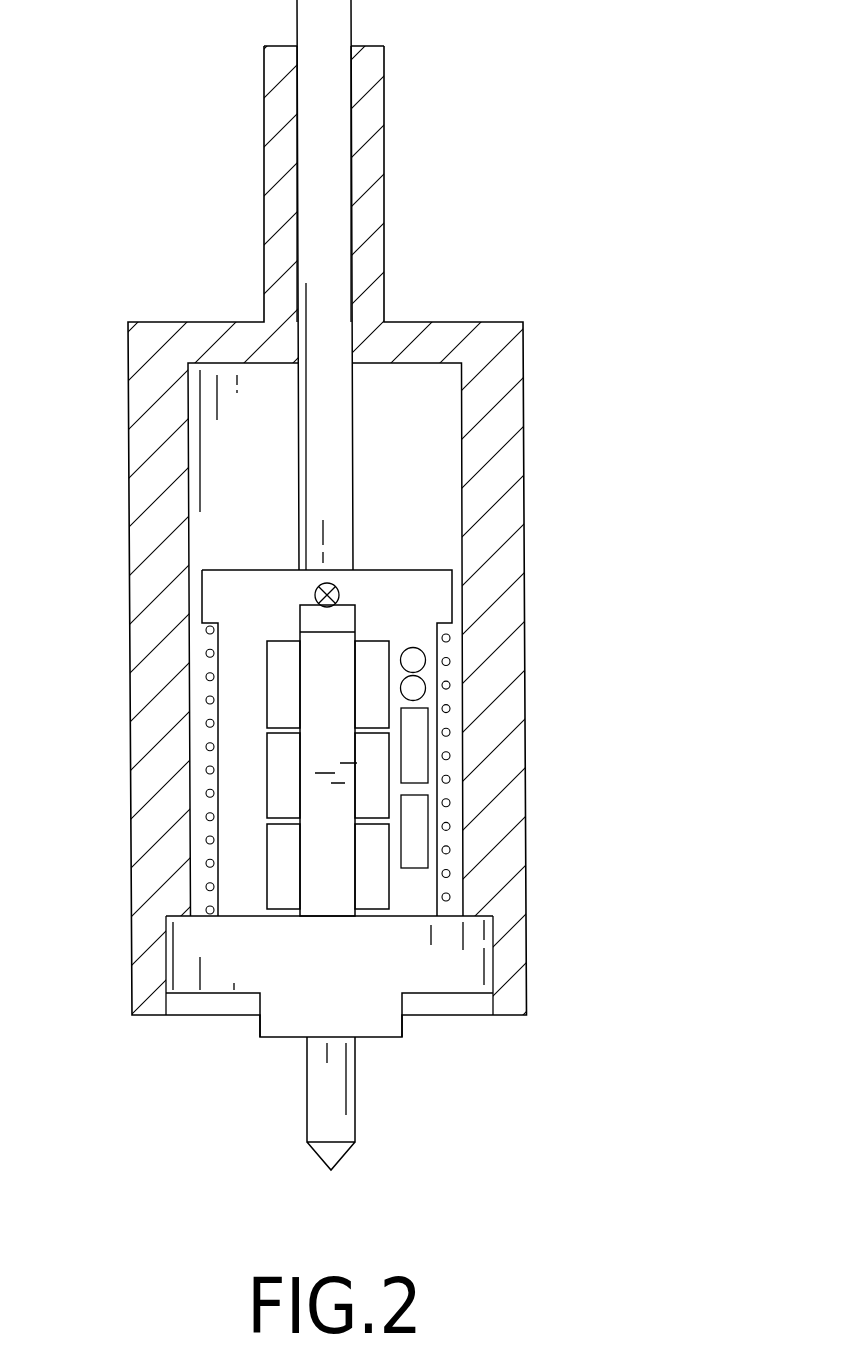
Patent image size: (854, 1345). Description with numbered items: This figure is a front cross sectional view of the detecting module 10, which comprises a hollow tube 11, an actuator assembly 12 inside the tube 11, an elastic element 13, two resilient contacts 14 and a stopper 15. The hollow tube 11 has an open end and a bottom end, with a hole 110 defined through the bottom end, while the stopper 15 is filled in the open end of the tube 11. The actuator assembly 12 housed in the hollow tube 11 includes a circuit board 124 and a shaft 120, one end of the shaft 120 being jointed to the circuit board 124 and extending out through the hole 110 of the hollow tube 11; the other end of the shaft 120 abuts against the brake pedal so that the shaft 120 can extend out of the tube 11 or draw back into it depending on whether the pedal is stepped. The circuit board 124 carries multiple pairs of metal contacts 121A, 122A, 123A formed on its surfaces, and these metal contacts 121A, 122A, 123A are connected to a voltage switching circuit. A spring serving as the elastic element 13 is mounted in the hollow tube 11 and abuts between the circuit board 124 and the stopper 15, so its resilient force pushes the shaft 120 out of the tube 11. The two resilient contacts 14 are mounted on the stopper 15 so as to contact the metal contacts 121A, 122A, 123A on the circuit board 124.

The detecting module 10 is at (531, 371).
The hollow tube 11 is at (514, 470).
The hole 110 is at (351, 352).
The actuator assembly 12 is at (232, 537).
The shaft 120 is at (333, 145).
The metal contact 121A is at (267, 690).
The metal contact 122A is at (267, 782).
The metal contact 123A is at (267, 868).
The circuit board 124 is at (400, 572).
The elastic element 13 is at (447, 780).
The resilient contacts 14 is at (342, 708).
The stopper 15 is at (430, 985).